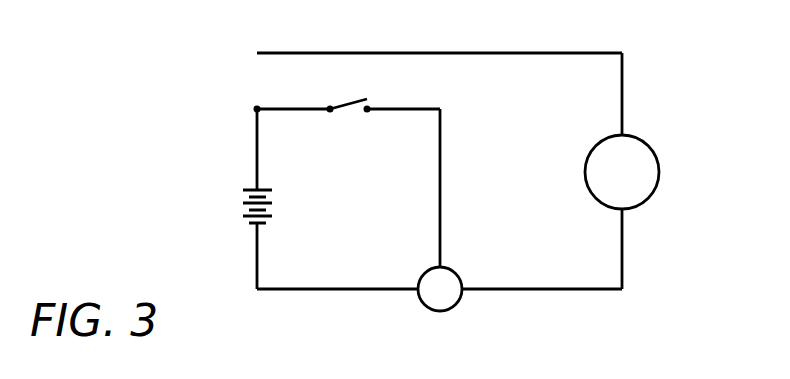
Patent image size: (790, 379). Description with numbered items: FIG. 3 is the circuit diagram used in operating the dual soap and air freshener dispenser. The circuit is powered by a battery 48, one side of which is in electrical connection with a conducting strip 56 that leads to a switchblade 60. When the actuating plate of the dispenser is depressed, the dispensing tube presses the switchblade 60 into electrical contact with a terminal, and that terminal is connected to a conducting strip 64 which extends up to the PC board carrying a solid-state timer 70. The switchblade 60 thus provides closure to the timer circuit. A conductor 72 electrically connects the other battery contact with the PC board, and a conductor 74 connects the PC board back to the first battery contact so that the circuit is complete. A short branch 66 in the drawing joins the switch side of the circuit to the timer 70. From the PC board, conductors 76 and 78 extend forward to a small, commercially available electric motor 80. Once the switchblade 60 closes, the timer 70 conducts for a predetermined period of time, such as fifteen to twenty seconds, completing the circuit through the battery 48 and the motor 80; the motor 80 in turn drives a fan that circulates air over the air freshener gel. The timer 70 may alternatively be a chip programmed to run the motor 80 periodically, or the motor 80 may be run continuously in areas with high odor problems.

The battery 48 is at (243, 211).
The conducting strip 56 is at (298, 110).
The switchblade 60 is at (352, 102).
The conducting strip 64 is at (455, 128).
The conductor 66 is at (442, 252).
The solid-state timer 70 is at (456, 304).
The conductor 72 is at (325, 290).
The conductor 74 is at (527, 53).
The conductor 76 is at (622, 91).
The conductor 78 is at (622, 238).
The electric motor 80 is at (659, 157).